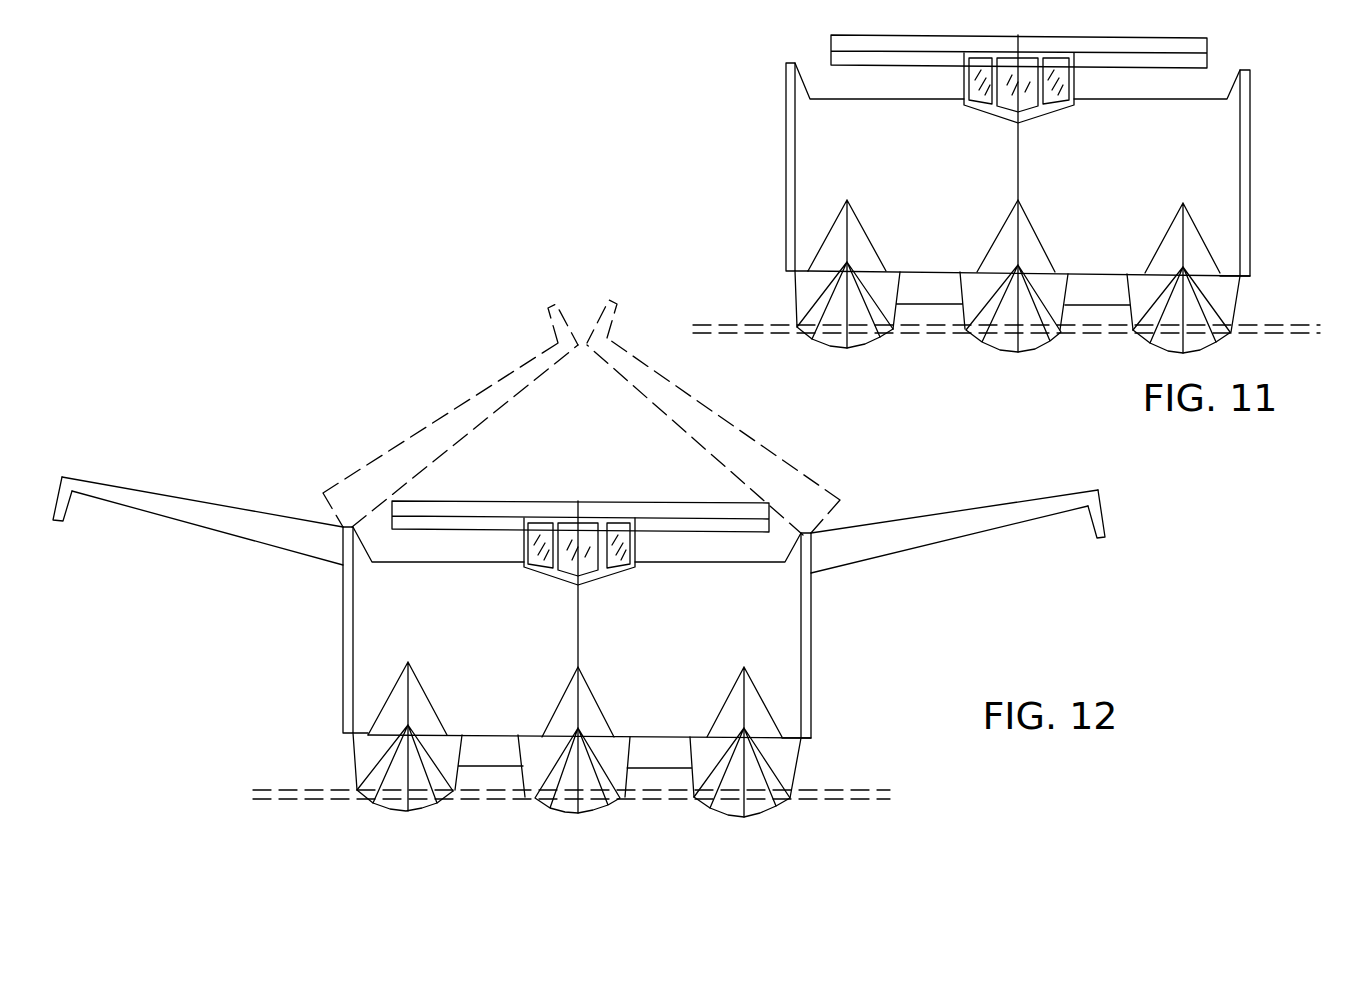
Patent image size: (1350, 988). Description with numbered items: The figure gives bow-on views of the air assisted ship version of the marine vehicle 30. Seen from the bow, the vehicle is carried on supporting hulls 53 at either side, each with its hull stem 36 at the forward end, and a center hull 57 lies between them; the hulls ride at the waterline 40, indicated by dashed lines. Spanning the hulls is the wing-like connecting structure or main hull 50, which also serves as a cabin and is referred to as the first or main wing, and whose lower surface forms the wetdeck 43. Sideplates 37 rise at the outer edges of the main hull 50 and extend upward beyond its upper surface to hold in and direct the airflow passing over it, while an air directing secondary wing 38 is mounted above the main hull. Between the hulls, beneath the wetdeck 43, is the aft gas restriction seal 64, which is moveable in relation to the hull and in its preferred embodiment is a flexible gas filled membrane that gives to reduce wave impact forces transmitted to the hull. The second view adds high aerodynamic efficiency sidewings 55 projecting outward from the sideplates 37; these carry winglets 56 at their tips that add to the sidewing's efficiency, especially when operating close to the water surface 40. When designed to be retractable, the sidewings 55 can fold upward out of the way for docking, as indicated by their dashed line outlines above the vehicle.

In FIG. 11, the marine vehicle 30 is at (889, 163).
In FIG. 12, the marine vehicle 30 is at (453, 623).
In FIG. 11, the main hull 50 is at (1121, 163).
In FIG. 12, the main hull 50 is at (684, 626).
In FIG. 11, the hull stem 36 is at (843, 320).
In FIG. 12, the hull stem 36 is at (790, 782).
In FIG. 11, the sideplates 37 is at (785, 152).
In FIG. 12, the sideplates 37 is at (343, 613).
In FIG. 11, the secondary wing 38 is at (1077, 38).
In FIG. 12, the secondary wing 38 is at (660, 502).
In FIG. 11, the waterline 40 is at (937, 338).
In FIG. 12, the waterline 40 is at (866, 797).
In FIG. 11, the wetdeck 43 is at (910, 272).
In FIG. 12, the wetdeck 43 is at (650, 737).
In FIG. 11, the supporting hulls 53 is at (790, 288).
In FIG. 12, the supporting hulls 53 is at (352, 752).
In FIG. 12, the sidewings 55 is at (227, 500).
In FIG. 12, the winglets 56 is at (70, 508).
In FIG. 11, the center hull 57 is at (1028, 340).
In FIG. 12, the center hull 57 is at (588, 715).
In FIG. 11, the aft gas restriction seal 64 is at (914, 298).
In FIG. 12, the aft gas restriction seal 64 is at (473, 761).